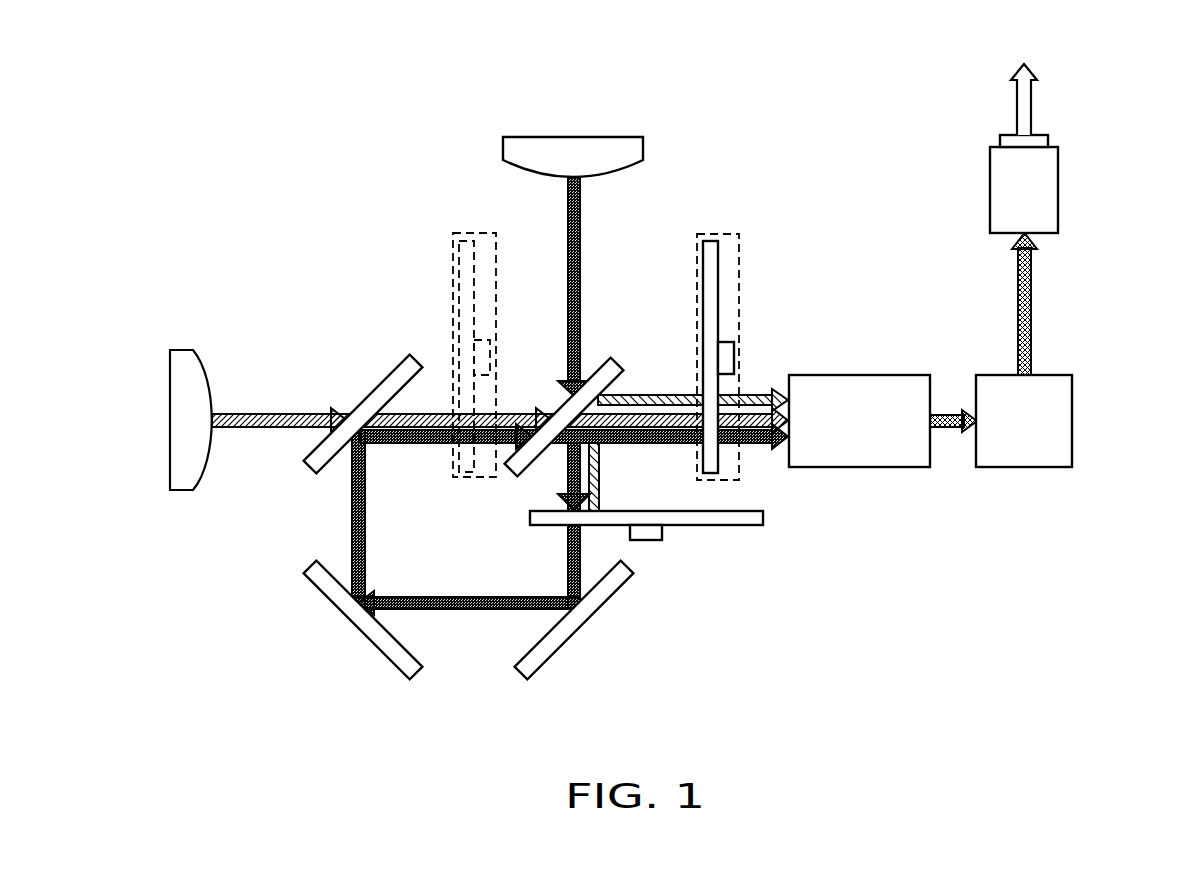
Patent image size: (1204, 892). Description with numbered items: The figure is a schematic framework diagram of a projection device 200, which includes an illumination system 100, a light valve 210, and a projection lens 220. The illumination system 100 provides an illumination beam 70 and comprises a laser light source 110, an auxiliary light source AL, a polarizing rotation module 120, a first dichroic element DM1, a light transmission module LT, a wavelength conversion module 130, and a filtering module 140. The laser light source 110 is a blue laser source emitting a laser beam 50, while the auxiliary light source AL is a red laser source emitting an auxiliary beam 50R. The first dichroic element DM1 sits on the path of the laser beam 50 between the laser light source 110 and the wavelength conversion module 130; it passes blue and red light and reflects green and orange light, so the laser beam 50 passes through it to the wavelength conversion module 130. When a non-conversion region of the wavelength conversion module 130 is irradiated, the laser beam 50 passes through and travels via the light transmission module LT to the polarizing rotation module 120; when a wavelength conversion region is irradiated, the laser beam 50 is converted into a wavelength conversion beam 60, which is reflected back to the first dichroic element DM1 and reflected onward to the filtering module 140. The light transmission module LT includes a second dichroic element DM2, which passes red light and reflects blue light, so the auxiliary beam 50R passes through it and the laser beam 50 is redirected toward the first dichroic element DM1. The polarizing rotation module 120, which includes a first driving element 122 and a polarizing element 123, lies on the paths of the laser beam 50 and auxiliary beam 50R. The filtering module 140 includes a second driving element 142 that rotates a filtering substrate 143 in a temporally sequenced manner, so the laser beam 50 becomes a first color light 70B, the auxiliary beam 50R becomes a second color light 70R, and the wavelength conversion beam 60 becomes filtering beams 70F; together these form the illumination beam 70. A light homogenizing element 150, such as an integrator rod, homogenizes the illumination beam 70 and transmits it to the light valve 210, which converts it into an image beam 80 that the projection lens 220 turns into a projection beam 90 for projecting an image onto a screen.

The illumination system 100 is at (548, 393).
The laser light source 110 is at (575, 152).
The polarizing rotation module 120 is at (444, 342).
The first driving element 122 is at (482, 376).
The polarizing element 123 is at (458, 268).
The wavelength conversion module 130 is at (540, 516).
The filtering module 140 is at (756, 357).
The second driving element 142 is at (725, 357).
The filtering substrate 143 is at (710, 316).
The light homogenizing element 150 is at (879, 452).
The laser beam 50 is at (568, 277).
The auxiliary beam 50R is at (275, 412).
The wavelength conversion beam 60 is at (599, 493).
The illumination beam 70 is at (946, 430).
The first color light 70B is at (730, 445).
The second color light 70R is at (760, 445).
The filtering beam 70F is at (775, 445).
The image beam 80 is at (1035, 312).
The projection beam 90 is at (1025, 102).
The projection device 200 is at (667, 398).
The light valve 210 is at (1057, 423).
The projection lens 220 is at (1045, 192).
The auxiliary light source AL is at (188, 374).
The first dichroic element DM1 is at (612, 388).
The second dichroic element DM2 is at (384, 388).
The light transmission module LT is at (402, 648).